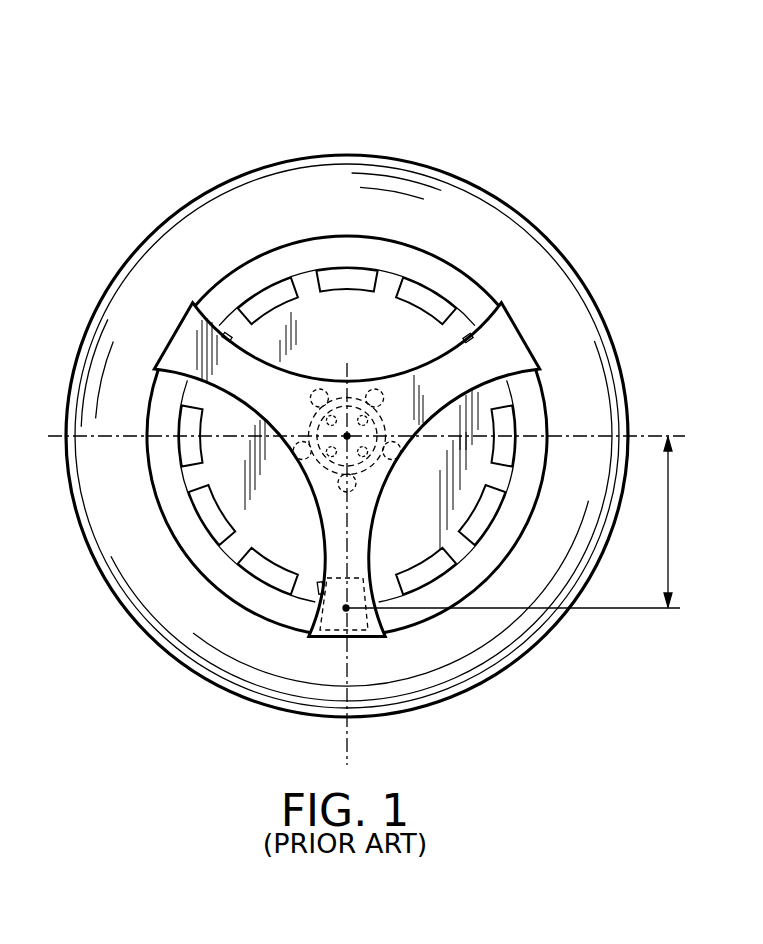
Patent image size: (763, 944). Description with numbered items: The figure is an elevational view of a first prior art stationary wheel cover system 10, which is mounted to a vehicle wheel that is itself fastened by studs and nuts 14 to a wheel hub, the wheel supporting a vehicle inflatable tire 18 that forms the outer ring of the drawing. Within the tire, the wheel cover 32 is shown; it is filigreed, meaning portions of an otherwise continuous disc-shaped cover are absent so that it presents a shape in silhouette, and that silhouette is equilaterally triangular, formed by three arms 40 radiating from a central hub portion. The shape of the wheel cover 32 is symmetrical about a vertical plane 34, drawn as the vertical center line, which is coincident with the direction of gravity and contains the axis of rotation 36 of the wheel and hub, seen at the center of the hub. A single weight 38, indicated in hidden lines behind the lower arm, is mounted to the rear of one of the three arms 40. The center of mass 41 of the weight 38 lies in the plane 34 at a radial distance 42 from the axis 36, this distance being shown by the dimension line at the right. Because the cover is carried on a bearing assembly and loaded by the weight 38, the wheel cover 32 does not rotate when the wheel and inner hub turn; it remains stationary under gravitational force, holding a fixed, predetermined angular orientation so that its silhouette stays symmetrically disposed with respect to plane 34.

The stationary wheel cover system 10 is at (341, 407).
The studs and nuts 14 is at (308, 382).
The vehicle inflatable tire 18 is at (322, 172).
The wheel cover 32 is at (178, 315).
The vertical plane 34 is at (345, 733).
The axis of rotation 36 is at (350, 440).
The weight 38 is at (353, 638).
The arms 40 is at (163, 342).
The center of mass 41 is at (346, 608).
The radial distance 42 is at (670, 518).